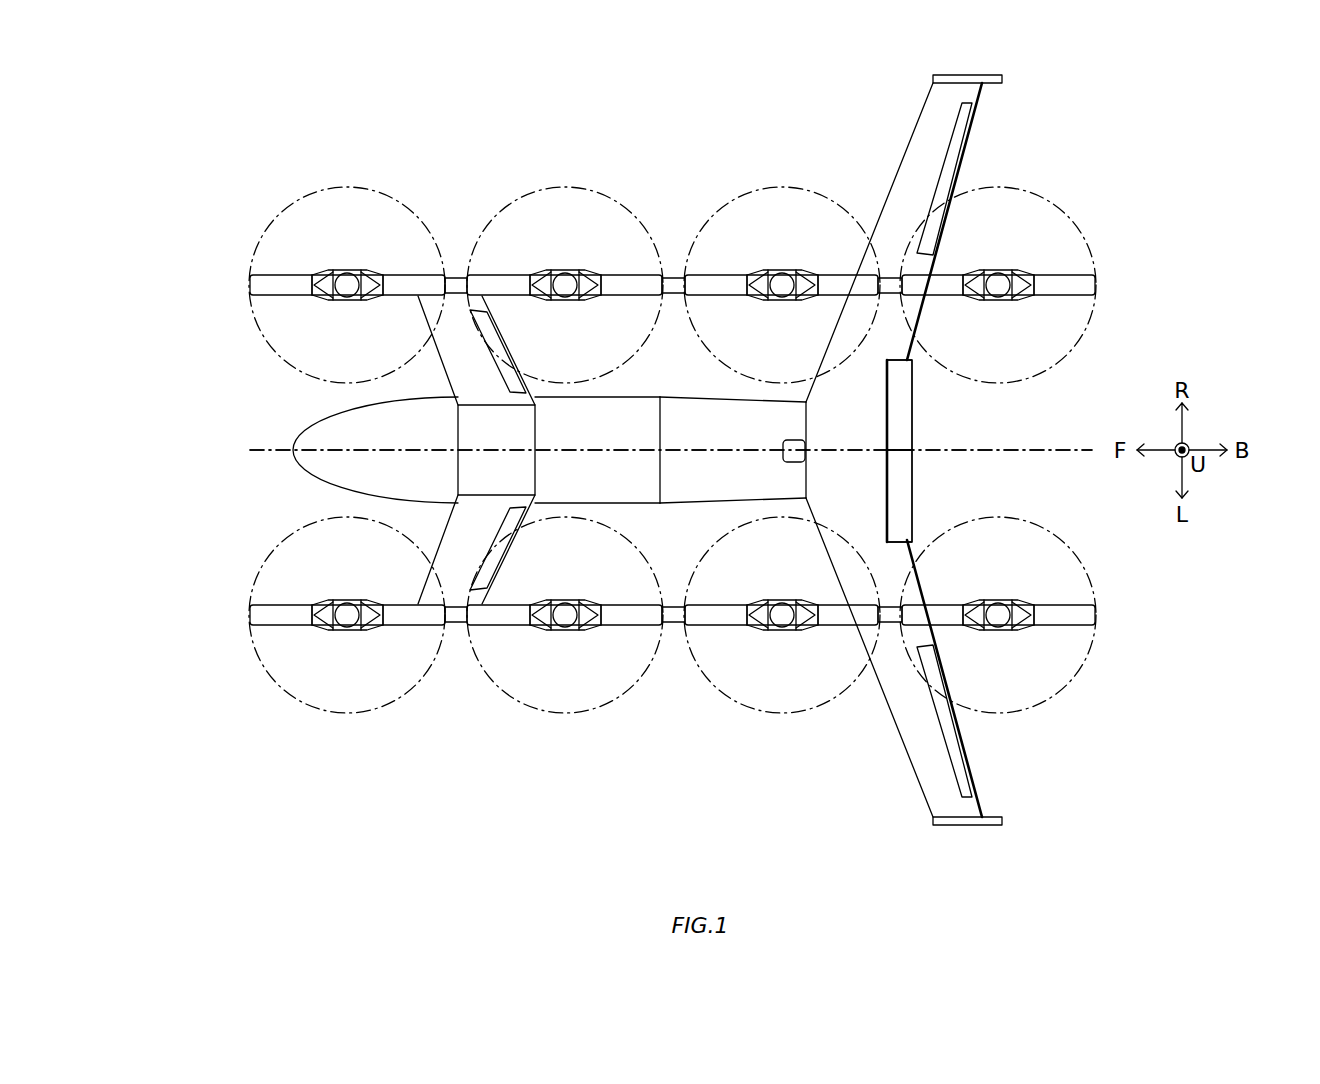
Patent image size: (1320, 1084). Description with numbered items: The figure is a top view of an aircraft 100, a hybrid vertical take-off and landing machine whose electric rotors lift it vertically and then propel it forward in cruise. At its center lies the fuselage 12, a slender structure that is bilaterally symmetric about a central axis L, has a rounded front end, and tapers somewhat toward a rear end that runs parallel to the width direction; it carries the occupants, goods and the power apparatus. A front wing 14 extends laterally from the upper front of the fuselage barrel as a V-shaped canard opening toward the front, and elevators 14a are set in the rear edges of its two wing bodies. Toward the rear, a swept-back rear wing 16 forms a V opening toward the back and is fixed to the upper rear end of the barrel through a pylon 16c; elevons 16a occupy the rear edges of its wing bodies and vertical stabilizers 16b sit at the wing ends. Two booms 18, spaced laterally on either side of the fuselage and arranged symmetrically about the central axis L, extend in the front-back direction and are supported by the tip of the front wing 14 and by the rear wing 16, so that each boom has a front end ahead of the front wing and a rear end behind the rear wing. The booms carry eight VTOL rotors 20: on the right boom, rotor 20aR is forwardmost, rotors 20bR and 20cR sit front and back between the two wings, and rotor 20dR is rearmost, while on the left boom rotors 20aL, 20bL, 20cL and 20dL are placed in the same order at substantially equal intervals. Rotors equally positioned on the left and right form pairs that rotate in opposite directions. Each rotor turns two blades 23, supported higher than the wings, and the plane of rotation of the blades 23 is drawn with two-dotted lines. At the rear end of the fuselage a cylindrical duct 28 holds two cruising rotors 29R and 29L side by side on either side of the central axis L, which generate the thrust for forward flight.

The aircraft 100 is at (157, 86).
The fuselage 12 is at (325, 437).
The front wing 14 is at (460, 360).
The elevator 14a is at (502, 342).
The rear wing 16 is at (917, 164).
The elevon 16a is at (965, 138).
The vertical stabilizer 16b is at (1002, 79).
The pylon 16c is at (790, 440).
The boom 18 is at (455, 272).
The VTOL rotor 20 is at (278, 253).
The VTOL rotor 20aR is at (326, 254).
The VTOL rotor 20bR is at (580, 246).
The VTOL rotor 20cR is at (767, 246).
The VTOL rotor 20dR is at (1016, 252).
The VTOL rotor 20aL is at (325, 649).
The VTOL rotor 20bL is at (580, 654).
The VTOL rotor 20cL is at (767, 654).
The VTOL rotor 20dL is at (1019, 650).
The blade 23 is at (256, 283).
The duct 28 is at (898, 378).
The cruising rotor 29R is at (920, 407).
The cruising rotor 29L is at (920, 495).
The central axis L is at (1085, 452).